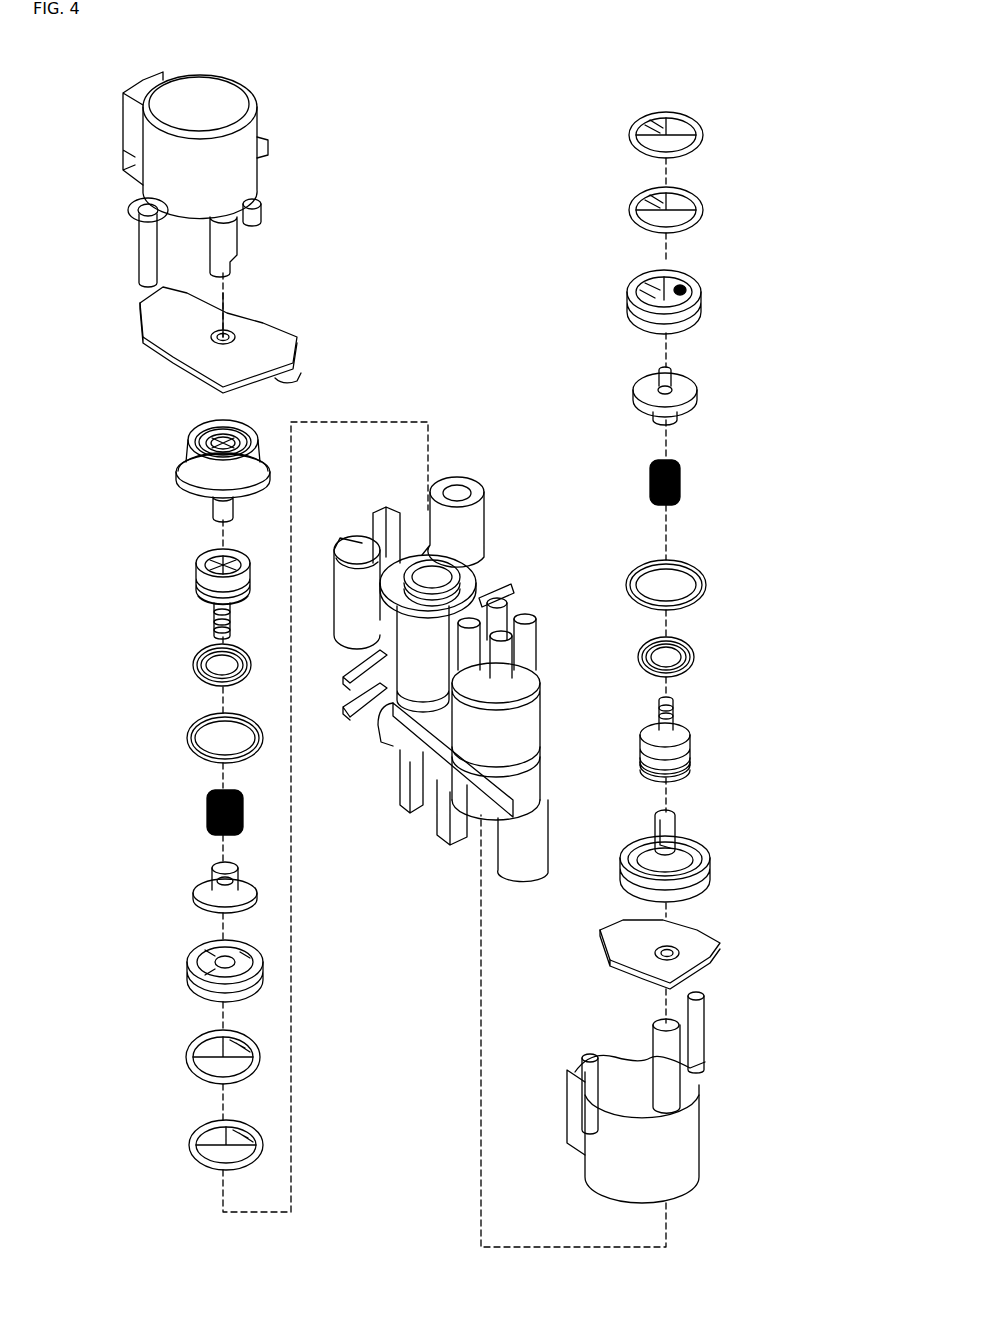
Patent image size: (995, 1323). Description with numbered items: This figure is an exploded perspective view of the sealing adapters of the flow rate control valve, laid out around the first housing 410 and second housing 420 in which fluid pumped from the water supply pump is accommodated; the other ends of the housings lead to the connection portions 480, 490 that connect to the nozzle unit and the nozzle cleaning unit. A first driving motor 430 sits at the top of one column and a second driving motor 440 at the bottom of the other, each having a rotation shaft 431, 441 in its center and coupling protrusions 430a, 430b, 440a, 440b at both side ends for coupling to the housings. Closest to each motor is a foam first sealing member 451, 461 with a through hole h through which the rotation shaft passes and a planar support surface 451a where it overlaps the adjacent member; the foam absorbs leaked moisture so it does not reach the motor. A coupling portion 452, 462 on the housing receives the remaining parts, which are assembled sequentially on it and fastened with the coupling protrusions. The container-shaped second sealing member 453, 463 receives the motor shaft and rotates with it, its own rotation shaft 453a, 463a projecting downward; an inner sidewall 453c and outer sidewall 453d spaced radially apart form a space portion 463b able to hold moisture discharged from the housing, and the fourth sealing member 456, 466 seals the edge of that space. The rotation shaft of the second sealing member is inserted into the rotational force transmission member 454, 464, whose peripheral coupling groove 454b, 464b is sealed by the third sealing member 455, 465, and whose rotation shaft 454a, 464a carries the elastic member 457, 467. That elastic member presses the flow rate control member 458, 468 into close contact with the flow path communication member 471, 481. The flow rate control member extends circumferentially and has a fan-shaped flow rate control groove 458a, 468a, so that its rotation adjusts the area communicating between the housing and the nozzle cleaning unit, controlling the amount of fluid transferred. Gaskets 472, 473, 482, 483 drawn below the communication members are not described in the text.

The first housing 410 is at (397, 655).
The second housing 420 is at (545, 755).
The first driving motor 430 is at (143, 148).
The coupling protrusion 430a is at (139, 255).
The coupling protrusion 430b is at (262, 209).
The rotation shaft 431 is at (237, 240).
The second driving motor 440 is at (698, 1155).
The coupling protrusion 440a is at (582, 1095).
The coupling protrusion 440b is at (705, 1051).
The rotation shaft 441 is at (681, 1092).
The first sealing member 451 is at (143, 339).
The planar support surface 451a is at (292, 378).
The coupling portion 452 is at (485, 522).
The second sealing member 453 is at (176, 476).
The rotation shaft 453a is at (212, 505).
The inner sidewall 453c is at (200, 428).
The outer sidewall 453d is at (190, 440).
The rotational force transmission member 454 is at (197, 567).
The rotation shaft 454a is at (214, 608).
The coupling groove 454b is at (200, 588).
The third sealing member 455 is at (195, 672).
The fourth sealing member 456 is at (190, 735).
The elastic member 457 is at (207, 812).
The flow rate control member 458 is at (208, 882).
The flow rate control groove 458a is at (206, 893).
The first sealing member 461 is at (711, 957).
The coupling portion 462 is at (549, 849).
The second sealing member 463 is at (706, 880).
The rotation shaft 463a is at (675, 822).
The space portion 463b is at (709, 858).
The rotational force transfer member 464 is at (691, 744).
The rotation shaft 464a is at (674, 715).
The coupling groove 464b is at (690, 766).
The third sealing member 465 is at (695, 659).
The fourth sealing member 466 is at (707, 582).
The elastic member 467 is at (681, 484).
The flow rate control member 468 is at (697, 389).
The flow rate control groove 468a is at (672, 372).
The flow path communication member 471 is at (190, 970).
The first gasket 472 is at (188, 1057).
The second gasket 473 is at (190, 1145).
The connection portion 480 is at (405, 733).
The flow path communication member 481 is at (700, 305).
The first gasket 482 is at (703, 219).
The second gasket 483 is at (703, 144).
The connection portion 490 is at (542, 709).
The through hole h is at (229, 337).